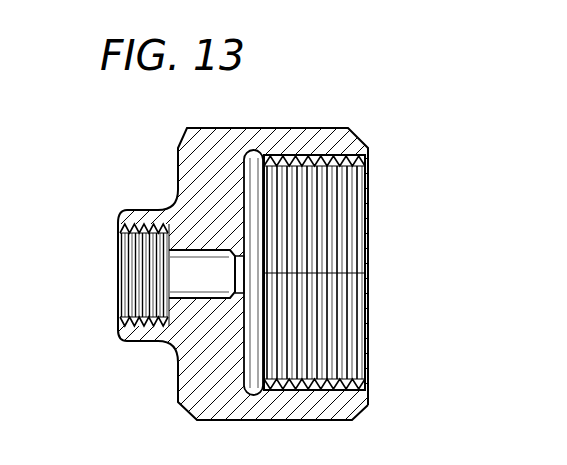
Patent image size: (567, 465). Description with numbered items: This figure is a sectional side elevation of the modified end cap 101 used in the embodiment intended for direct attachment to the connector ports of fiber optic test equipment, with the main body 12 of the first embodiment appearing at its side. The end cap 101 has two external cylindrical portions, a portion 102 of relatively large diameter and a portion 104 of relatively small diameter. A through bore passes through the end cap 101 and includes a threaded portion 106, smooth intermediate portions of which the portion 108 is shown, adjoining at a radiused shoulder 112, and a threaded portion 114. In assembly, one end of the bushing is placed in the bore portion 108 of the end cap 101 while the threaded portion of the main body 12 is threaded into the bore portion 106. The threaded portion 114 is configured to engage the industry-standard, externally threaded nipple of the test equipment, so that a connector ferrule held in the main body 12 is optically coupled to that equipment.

The end cap 101 is at (337, 114).
The external cylindrical portion 102 is at (266, 404).
The external cylindrical portion 104 is at (150, 222).
The threaded portion 106 is at (109, 274).
The smooth intermediate portion 108 is at (212, 270).
The radiused shoulder 112 is at (233, 300).
The threaded portion 114 is at (358, 238).
The main body 12 is at (9, 168).